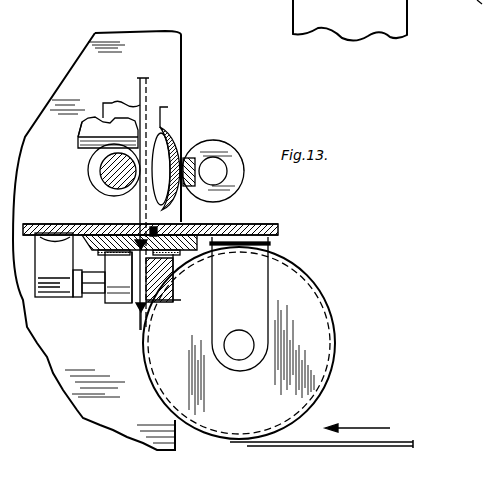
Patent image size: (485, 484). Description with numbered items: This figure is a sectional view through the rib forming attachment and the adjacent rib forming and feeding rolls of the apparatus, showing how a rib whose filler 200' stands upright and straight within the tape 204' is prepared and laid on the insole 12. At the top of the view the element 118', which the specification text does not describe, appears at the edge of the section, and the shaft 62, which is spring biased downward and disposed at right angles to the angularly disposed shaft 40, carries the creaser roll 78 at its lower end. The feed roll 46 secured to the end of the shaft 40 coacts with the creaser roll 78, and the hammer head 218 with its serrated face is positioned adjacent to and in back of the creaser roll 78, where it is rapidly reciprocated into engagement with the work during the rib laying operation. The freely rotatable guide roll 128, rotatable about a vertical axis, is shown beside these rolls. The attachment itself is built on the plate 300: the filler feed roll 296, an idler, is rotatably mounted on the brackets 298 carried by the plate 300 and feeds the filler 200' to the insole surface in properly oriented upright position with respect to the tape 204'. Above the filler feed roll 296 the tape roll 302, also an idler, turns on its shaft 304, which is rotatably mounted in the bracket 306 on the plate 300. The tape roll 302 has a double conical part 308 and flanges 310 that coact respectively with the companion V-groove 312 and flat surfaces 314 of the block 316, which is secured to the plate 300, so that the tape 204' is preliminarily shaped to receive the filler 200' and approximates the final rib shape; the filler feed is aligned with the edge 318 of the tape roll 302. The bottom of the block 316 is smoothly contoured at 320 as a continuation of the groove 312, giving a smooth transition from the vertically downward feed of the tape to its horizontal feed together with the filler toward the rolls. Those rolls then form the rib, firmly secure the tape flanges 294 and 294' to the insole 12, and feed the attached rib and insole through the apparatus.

The insole 12 is at (138, 36).
The support frame 118' is at (328, 20).
The tape 204' is at (153, 186).
The flange 294 is at (121, 87).
The flange 294' is at (197, 91).
The shaft 62 is at (114, 152).
The hammer head 218 is at (83, 143).
The creaser roll 78 is at (90, 168).
The feed roll 46 is at (183, 143).
The angularly disposed shaft 40 is at (202, 156).
The guide roll 128 is at (231, 156).
The plate 300 is at (278, 229).
The V-groove 312 is at (214, 217).
The flat surfaces 314 is at (101, 224).
The smoothly contoured bottom 320 is at (117, 270).
The block 316 is at (78, 256).
The bracket 306 is at (62, 294).
The shaft 304 is at (100, 294).
The tape roll 302 is at (118, 306).
The double conical part 308 is at (141, 304).
The flanges 310 is at (165, 303).
The edge 318 is at (151, 318).
The brackets 298 is at (253, 278).
The filler feed roll 296 is at (325, 323).
The filler 200' is at (329, 426).